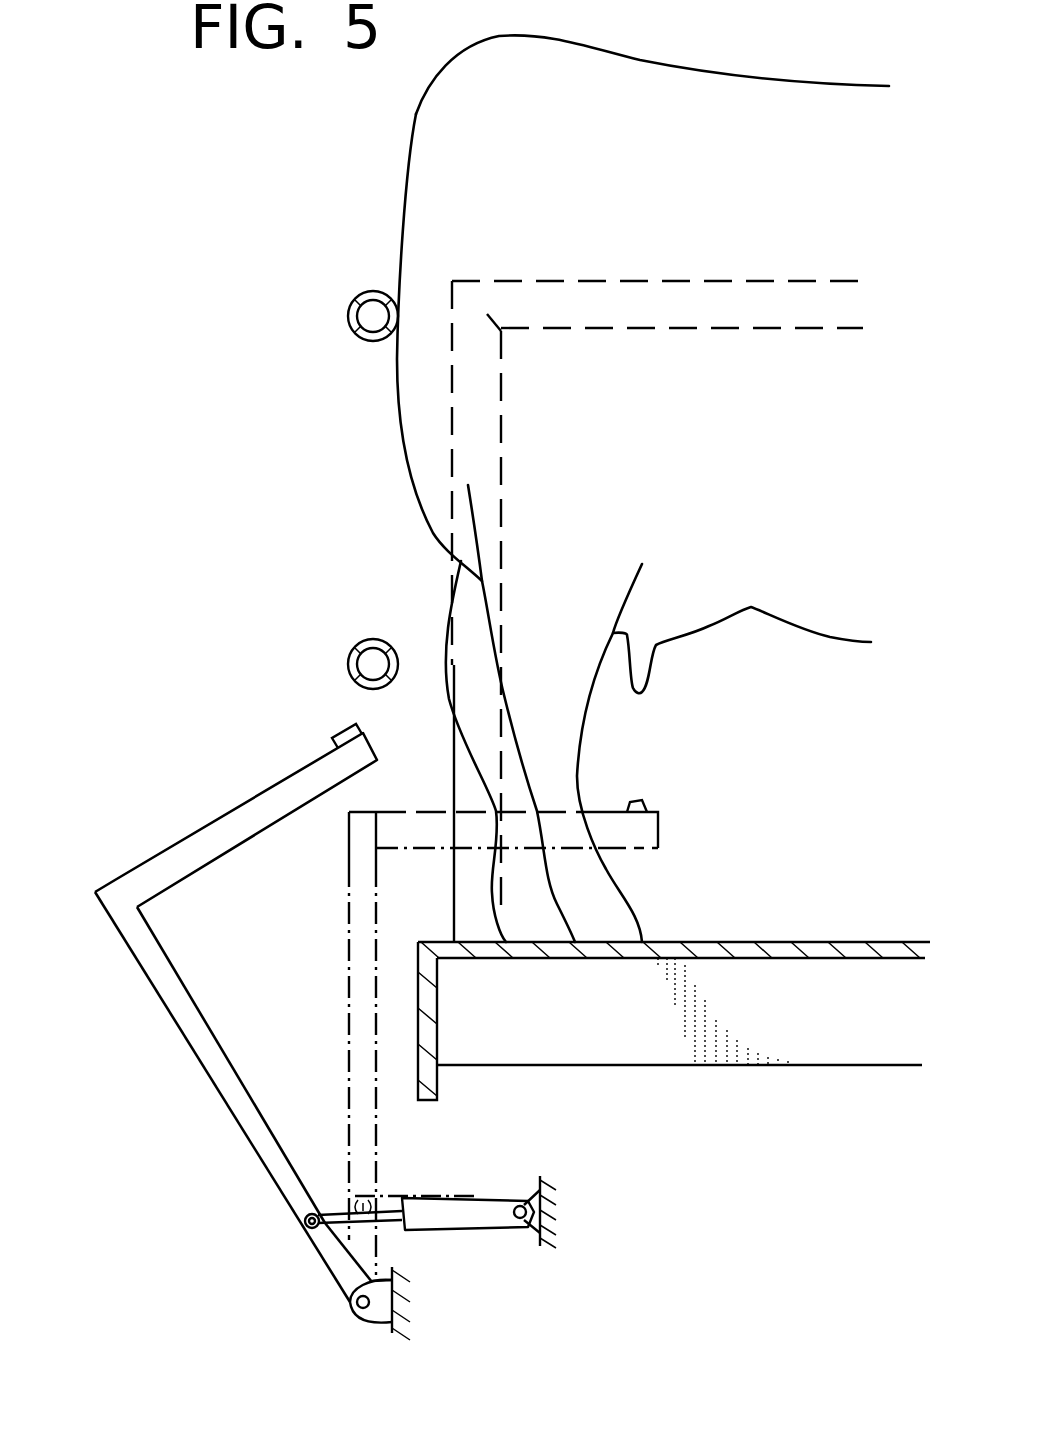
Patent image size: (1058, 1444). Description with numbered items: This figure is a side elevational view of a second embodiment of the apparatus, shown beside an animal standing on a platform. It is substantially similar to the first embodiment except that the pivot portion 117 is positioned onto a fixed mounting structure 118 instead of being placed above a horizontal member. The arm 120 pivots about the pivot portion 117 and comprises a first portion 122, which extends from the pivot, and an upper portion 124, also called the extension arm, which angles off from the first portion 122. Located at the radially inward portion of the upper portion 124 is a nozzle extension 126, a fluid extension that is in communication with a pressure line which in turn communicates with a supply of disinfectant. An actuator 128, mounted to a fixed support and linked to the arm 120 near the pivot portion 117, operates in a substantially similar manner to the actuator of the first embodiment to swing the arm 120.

The pivot portion 117 is at (350, 1304).
The fixed mounting structure 118 is at (400, 1308).
The arm 120 is at (237, 1102).
The first portion 122 is at (185, 1018).
The upper portion 124 is at (147, 875).
The nozzle extension 126 is at (333, 736).
The actuator 128 is at (482, 1207).